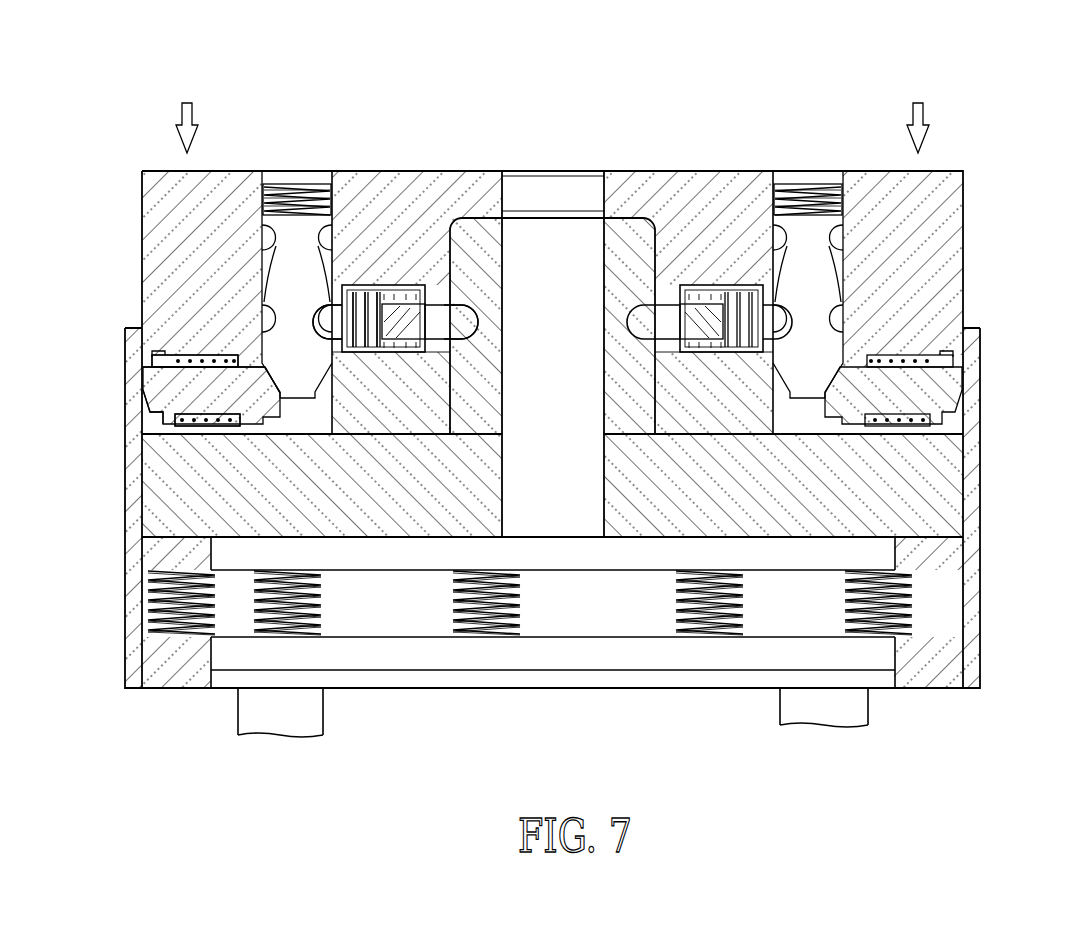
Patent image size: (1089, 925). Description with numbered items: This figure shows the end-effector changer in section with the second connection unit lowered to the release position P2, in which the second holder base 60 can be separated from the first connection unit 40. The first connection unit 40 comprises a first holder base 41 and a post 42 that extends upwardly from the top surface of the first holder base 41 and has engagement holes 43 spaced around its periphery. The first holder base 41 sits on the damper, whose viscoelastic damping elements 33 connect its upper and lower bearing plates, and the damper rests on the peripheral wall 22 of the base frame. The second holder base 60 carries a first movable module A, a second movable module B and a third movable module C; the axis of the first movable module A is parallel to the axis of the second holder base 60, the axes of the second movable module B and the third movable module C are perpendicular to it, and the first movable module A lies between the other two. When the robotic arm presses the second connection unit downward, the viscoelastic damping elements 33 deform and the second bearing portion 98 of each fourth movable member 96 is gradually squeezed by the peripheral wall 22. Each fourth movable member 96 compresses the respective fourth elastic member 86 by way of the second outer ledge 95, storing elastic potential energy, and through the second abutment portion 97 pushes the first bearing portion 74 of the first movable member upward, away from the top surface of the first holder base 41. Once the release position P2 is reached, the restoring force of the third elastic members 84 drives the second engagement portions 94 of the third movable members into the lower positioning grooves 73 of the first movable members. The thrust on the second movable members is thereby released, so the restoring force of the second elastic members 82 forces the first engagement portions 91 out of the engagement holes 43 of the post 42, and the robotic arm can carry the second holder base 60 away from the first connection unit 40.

The peripheral wall 22 is at (135, 477).
The viscoelastic damping elements 33 is at (150, 618).
The first connection unit 40 is at (633, 631).
The first holder base 41 is at (385, 505).
The post 42 is at (632, 238).
The engagement holes 43 is at (478, 330).
The second holder base 60 is at (925, 258).
The lower positioning groove 73 is at (318, 303).
The first bearing portion 74 is at (312, 400).
The second elastic members 82 is at (410, 288).
The third elastic members 84 is at (357, 290).
The fourth elastic members 86 is at (248, 358).
The first engagement portion 91 is at (455, 300).
The second engagement portion 94 is at (340, 290).
The second outer ledge 95 is at (175, 352).
The fourth movable members 96 is at (152, 409).
The second abutment portion 97 is at (205, 355).
The second bearing portion 98 is at (165, 381).
The first movable module A is at (258, 207).
The second movable module B is at (399, 214).
The third movable module C is at (161, 358).
The release position P2 is at (818, 120).